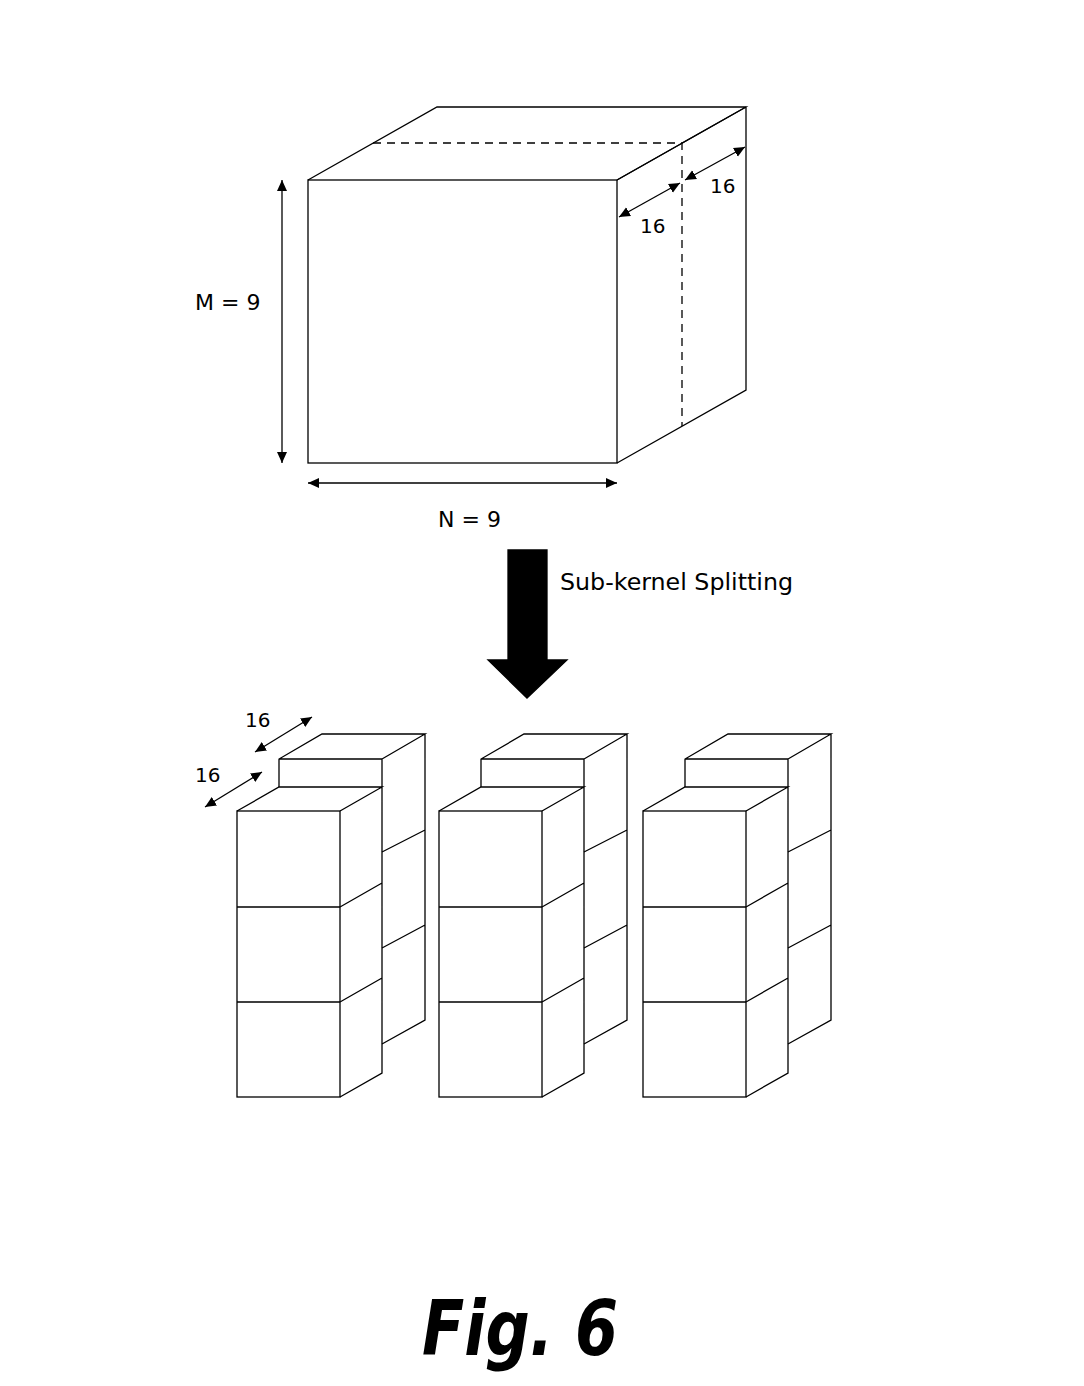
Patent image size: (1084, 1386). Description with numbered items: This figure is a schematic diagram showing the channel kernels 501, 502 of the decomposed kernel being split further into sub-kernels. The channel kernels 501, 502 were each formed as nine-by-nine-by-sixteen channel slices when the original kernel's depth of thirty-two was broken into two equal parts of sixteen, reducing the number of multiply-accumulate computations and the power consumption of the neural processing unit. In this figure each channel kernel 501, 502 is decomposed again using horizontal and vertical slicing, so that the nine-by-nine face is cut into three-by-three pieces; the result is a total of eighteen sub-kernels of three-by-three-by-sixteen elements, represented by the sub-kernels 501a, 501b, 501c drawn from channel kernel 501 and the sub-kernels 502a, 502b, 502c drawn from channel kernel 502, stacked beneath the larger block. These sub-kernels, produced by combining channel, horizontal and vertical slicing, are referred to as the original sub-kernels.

The channel kernel 501 is at (381, 168).
The channel kernel 502 is at (695, 122).
The sub-kernel 501a is at (237, 947).
The sub-kernel 501b is at (558, 1045).
The sub-kernel 501c is at (763, 937).
The sub-kernel 502a is at (372, 743).
The sub-kernel 502b is at (563, 752).
The sub-kernel 502c is at (761, 748).